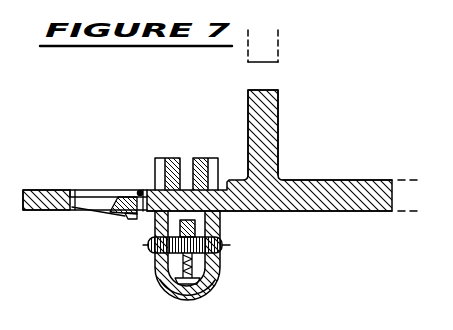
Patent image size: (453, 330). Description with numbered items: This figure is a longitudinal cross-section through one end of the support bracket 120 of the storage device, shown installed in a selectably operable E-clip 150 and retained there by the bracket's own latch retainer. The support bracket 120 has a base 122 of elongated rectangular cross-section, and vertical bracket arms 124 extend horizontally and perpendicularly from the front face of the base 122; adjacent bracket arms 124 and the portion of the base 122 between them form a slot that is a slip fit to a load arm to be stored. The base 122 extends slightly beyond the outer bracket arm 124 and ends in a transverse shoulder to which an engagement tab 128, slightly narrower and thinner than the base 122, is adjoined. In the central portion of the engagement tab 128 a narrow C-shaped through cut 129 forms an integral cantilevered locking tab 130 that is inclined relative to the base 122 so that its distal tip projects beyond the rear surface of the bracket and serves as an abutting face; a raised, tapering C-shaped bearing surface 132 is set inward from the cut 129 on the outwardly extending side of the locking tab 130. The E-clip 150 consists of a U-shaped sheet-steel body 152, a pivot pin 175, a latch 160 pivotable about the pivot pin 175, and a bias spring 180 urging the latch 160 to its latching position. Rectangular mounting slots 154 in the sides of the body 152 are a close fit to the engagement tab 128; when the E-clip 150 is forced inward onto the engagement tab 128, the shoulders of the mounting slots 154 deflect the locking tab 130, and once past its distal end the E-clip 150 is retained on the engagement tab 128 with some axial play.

The support bracket 120 is at (340, 212).
The base 122 is at (328, 180).
The bracket arms 124 is at (280, 97).
The engagement tab 128 is at (62, 162).
The C-shaped through cut 129 is at (139, 191).
The locking tab 130 is at (132, 207).
The bearing surface 132 is at (128, 216).
The E-clip 150 is at (218, 282).
The body 152 is at (164, 168).
The mounting slots 154 is at (220, 214).
The latch 160 is at (189, 222).
The pivot pin 175 is at (221, 254).
The bias spring 180 is at (167, 280).